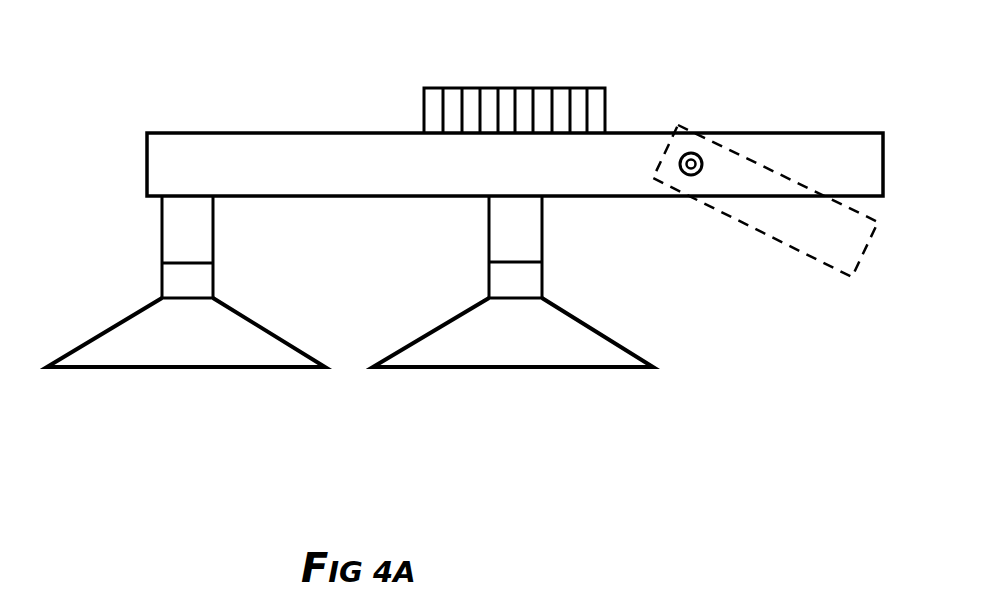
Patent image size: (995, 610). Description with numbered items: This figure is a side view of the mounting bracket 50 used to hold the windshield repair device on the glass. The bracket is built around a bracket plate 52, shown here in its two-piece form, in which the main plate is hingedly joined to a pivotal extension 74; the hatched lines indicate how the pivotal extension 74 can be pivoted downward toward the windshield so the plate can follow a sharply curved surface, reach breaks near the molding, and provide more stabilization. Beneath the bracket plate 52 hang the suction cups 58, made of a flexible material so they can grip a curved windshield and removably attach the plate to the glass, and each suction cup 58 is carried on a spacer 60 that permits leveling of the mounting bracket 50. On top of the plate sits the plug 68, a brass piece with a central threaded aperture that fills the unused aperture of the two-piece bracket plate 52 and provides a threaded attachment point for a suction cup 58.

The mounting bracket 50 is at (279, 50).
The bracket plate 52 is at (315, 133).
The suction cup 58 is at (118, 340).
The spacer 60 is at (172, 243).
The plug 68 is at (523, 97).
The pivotal extension 74 is at (813, 132).